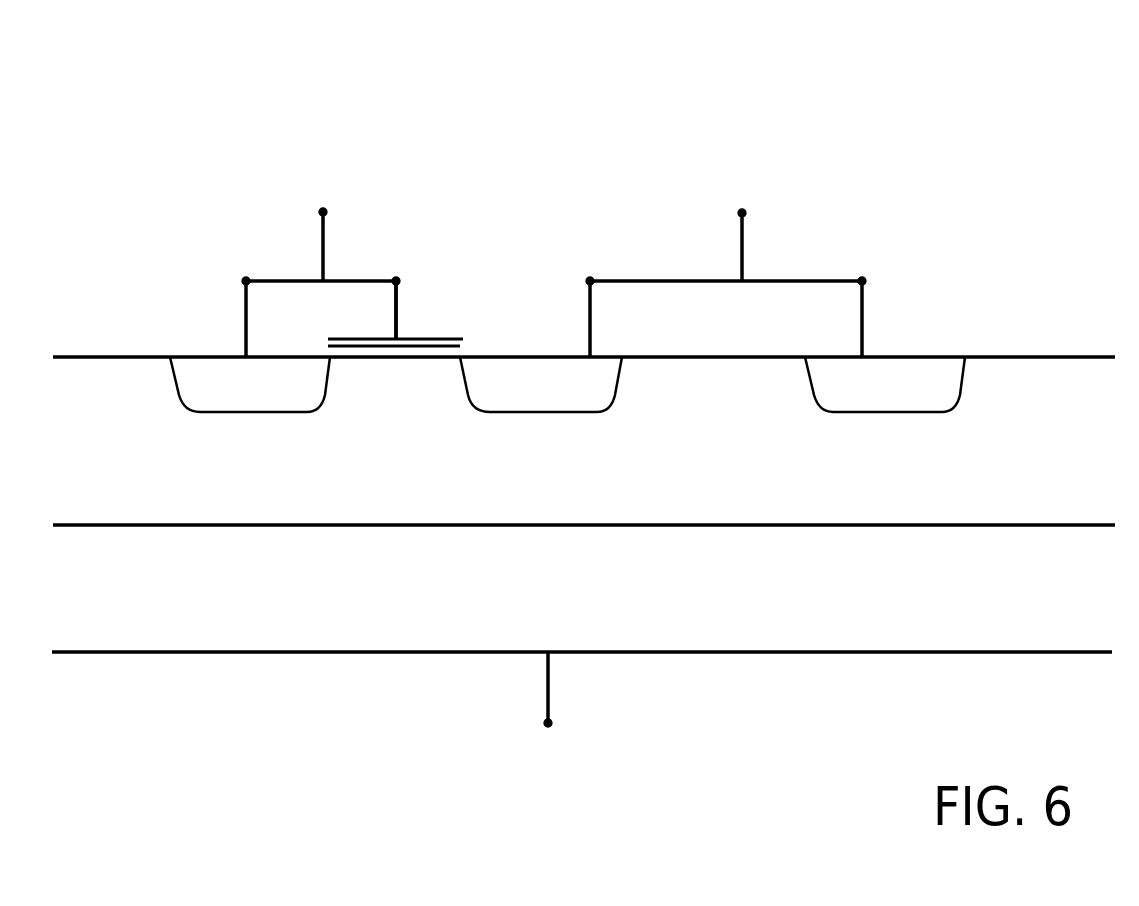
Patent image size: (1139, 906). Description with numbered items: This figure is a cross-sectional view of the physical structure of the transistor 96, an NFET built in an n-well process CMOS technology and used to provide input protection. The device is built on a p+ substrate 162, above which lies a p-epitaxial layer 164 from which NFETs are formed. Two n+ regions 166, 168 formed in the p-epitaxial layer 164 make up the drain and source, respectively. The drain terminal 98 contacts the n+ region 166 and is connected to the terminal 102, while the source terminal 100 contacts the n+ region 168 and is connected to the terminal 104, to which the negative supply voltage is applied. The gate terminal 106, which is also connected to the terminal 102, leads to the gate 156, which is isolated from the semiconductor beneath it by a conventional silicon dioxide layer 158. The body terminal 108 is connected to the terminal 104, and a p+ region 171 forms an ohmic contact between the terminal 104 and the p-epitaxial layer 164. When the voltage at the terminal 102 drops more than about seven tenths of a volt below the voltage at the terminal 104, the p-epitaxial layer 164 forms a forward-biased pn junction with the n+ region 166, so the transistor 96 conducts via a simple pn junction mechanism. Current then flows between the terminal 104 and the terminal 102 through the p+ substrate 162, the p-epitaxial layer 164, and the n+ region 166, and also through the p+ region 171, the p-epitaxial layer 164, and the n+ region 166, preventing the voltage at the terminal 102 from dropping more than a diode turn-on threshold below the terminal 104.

The transistor 96 is at (160, 168).
The drain terminal 98 is at (246, 281).
The source terminal 100 is at (590, 281).
The terminal 102 is at (323, 212).
The terminal 104 is at (742, 213).
The gate terminal 106 is at (396, 281).
The body terminal 108 is at (862, 281).
The gate 156 is at (463, 339).
The silicon dioxide layer 158 is at (460, 346).
The p+ substrate 162 is at (158, 619).
The p-epitaxial layer 164 is at (158, 488).
The n+ region 166 is at (295, 402).
The n+ region 168 is at (585, 402).
The p+ region 171 is at (928, 402).